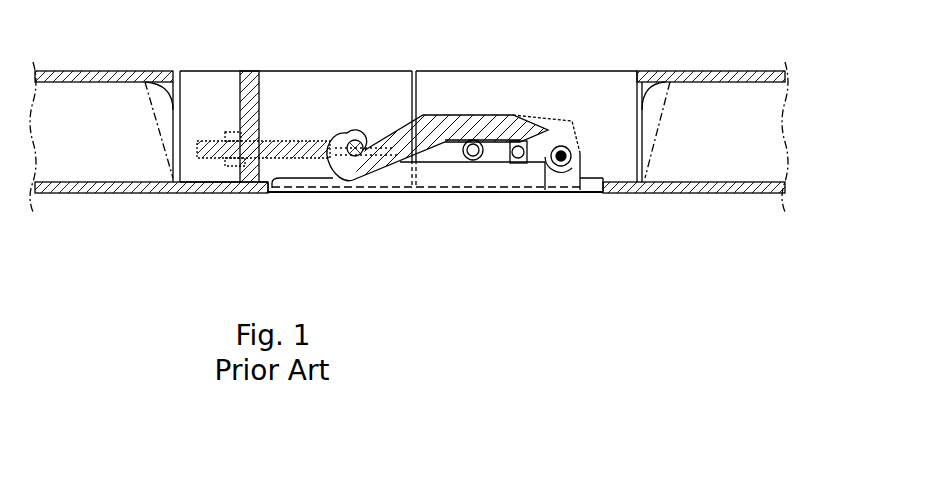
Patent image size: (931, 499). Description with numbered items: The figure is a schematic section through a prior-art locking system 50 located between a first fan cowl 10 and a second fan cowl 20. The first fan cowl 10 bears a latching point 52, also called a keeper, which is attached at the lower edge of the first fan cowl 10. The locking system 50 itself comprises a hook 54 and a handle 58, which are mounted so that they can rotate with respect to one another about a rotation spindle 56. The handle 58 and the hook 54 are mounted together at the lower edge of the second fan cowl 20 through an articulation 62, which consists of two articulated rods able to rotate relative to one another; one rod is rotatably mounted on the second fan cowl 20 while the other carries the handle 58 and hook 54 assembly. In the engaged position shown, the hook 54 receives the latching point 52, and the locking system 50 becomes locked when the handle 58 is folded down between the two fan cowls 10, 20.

The first fan cowl 10 is at (127, 152).
The second fan cowl 20 is at (721, 126).
The locking system 50 is at (458, 199).
The latching point 52 is at (359, 141).
The hook 54 is at (452, 118).
The rotation spindle 56 is at (567, 151).
The handle 58 is at (450, 172).
The articulation 62 is at (481, 158).